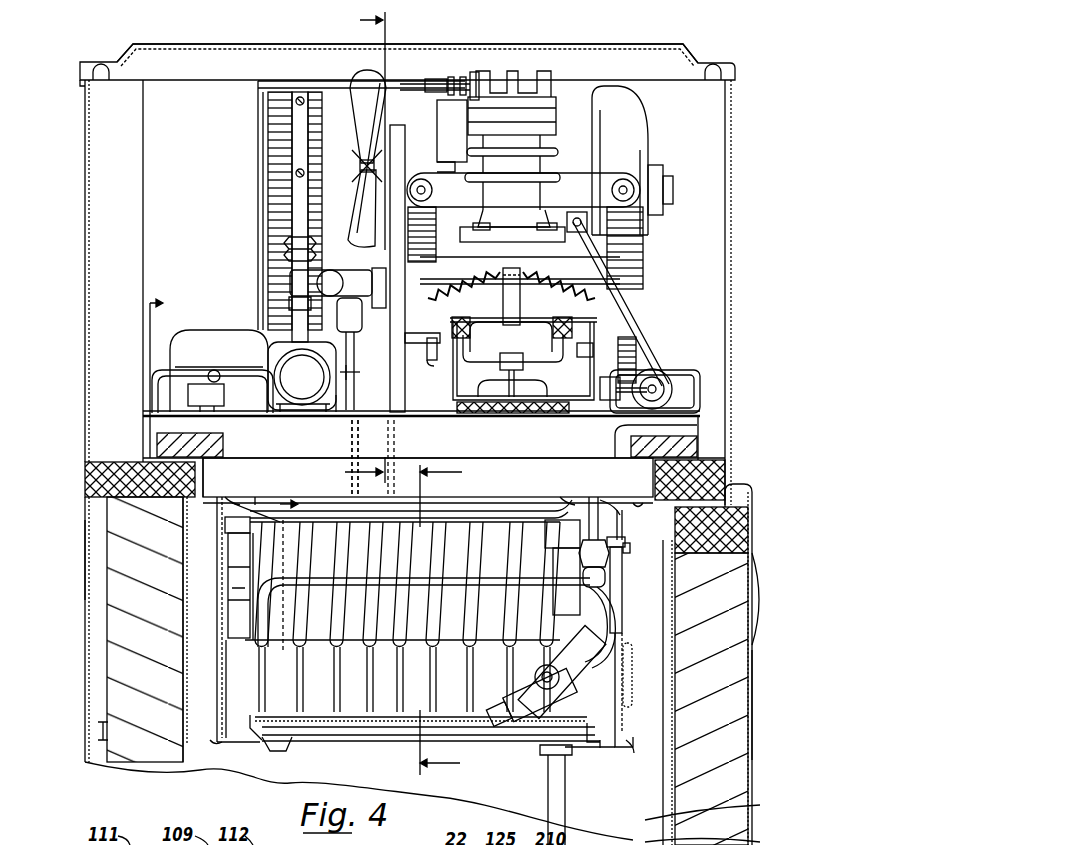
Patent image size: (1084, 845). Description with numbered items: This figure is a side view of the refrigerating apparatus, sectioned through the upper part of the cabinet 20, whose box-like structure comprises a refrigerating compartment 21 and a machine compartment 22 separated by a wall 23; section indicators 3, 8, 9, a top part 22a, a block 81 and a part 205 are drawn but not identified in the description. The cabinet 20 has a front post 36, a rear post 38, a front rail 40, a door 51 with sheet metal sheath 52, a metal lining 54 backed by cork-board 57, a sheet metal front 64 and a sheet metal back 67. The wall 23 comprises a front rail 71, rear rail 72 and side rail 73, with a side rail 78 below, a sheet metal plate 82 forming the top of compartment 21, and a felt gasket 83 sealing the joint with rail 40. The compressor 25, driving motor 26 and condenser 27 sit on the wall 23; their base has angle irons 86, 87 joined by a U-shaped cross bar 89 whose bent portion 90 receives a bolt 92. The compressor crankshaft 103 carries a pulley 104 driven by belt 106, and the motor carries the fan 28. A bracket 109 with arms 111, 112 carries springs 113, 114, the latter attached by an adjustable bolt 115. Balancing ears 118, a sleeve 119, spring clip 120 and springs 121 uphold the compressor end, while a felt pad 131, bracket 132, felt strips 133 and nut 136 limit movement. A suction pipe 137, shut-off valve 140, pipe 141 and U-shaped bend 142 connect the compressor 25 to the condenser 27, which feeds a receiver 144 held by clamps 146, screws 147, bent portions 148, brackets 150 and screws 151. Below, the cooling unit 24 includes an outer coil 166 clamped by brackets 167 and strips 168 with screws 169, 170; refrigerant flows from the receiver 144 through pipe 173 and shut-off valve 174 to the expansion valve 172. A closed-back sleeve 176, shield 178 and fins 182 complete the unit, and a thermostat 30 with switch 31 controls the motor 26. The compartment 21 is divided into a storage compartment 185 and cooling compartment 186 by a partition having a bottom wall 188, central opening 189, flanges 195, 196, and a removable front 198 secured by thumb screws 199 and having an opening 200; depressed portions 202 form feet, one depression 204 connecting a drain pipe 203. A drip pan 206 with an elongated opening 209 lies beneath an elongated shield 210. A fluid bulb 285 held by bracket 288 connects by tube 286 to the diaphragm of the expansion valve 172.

The section line 3- 3 is at (441, 620).
The section line 8- 8 is at (232, 410).
The section line 9- 9 is at (358, 254).
The cabinet 20 is at (62, 609).
The refrigerating compartment 21 is at (229, 773).
The machine compartment 22 is at (158, 161).
The top cover 22a is at (126, 56).
The wall 23 is at (705, 432).
The cooling unit 24 is at (658, 582).
The compressor 25 is at (529, 146).
The driving motor 26 is at (632, 111).
The condenser 27 is at (279, 113).
The fan 28 is at (380, 115).
The thermostat 30 is at (236, 563).
The switch 31 is at (216, 333).
The front post 36 is at (712, 160).
The rear post 38 is at (102, 209).
The front rail 40 is at (712, 474).
The door 51 is at (725, 679).
The sheet metal sheath 52 is at (752, 700).
The metal lining 54 is at (196, 776).
The cork-board 57 is at (118, 633).
The sheet metal front 64 is at (732, 280).
The sheet metal back 67 is at (87, 549).
The front rail 71 is at (705, 453).
The rear rail 72 is at (175, 441).
The side rail 73 is at (290, 459).
The side rail 78 is at (360, 463).
The insulating block 81 is at (126, 462).
The sheet metal plate 82 is at (256, 498).
The felt gasket 83 is at (203, 460).
The angle iron 86 is at (432, 366).
The angle iron 87 is at (599, 381).
The cross bar 89 is at (456, 392).
The upwardly bent portion 90 is at (513, 401).
The bolt 92 is at (500, 332).
The crankshaft 103 is at (352, 291).
The pulley 104 is at (422, 149).
The belt 106 is at (364, 378).
The bracket 109 is at (541, 197).
The arm 111 is at (452, 171).
The arm 112 is at (600, 185).
The spring 113 is at (438, 221).
The spring 114 is at (648, 247).
The adjustable bolt 115 is at (636, 357).
The ear 118 is at (632, 311).
The sleeve 119 is at (509, 292).
The spring clip 120 is at (500, 242).
The spring 121 is at (436, 293).
The felt pad 131 is at (483, 413).
The bracket 132 is at (540, 401).
The felt strip 133 is at (570, 345).
The nut 136 is at (478, 399).
The suction pipe 137 is at (384, 582).
The shut-off valve 140 is at (473, 72).
The pipe 141 is at (273, 85).
The U-shaped bend 142 is at (263, 159).
The receiver 144 is at (298, 413).
The clamp 146 is at (331, 375).
The screw 147 is at (303, 416).
The upwardly bent portion 148 is at (348, 347).
The condenser spacing and supporting bracket 150 is at (297, 128).
The screw 151 is at (296, 177).
The outer coil 166 is at (300, 592).
The bracket 167 is at (378, 528).
The strip 168 is at (476, 530).
The screw 169 is at (216, 512).
The screw 170 is at (290, 530).
The expansion valve 172 is at (566, 695).
The pipe 173 is at (370, 358).
The shut-off valve 174 is at (298, 277).
The closed-back sleeve 176 is at (560, 555).
The shield 178 is at (430, 630).
The fin 182 is at (251, 690).
The food or storage compartment 185 is at (719, 805).
The cooling compartment 186 is at (236, 657).
The bottom wall 188 is at (628, 756).
The central opening 189 is at (350, 743).
The flange 195 is at (213, 736).
The flange 196 is at (623, 627).
The removable front 198 is at (630, 665).
The thumb screw 199 is at (632, 548).
The opening 200 is at (615, 583).
The depressed portion 202 is at (282, 753).
The drain pipe 203 is at (553, 790).
The depressed portion 204 is at (580, 756).
The pipe 205 is at (176, 361).
The drip pan 206 is at (257, 723).
The elongated opening 209 is at (384, 736).
The elongated shield 210 is at (320, 715).
The fluid bulb 285 is at (700, 376).
The tube 286 is at (705, 394).
The bracket 288 is at (705, 360).